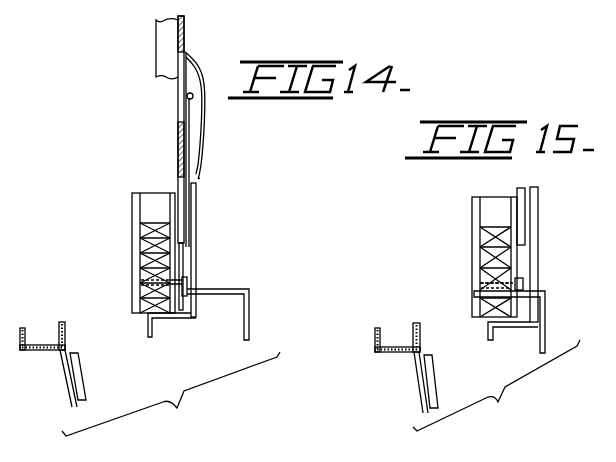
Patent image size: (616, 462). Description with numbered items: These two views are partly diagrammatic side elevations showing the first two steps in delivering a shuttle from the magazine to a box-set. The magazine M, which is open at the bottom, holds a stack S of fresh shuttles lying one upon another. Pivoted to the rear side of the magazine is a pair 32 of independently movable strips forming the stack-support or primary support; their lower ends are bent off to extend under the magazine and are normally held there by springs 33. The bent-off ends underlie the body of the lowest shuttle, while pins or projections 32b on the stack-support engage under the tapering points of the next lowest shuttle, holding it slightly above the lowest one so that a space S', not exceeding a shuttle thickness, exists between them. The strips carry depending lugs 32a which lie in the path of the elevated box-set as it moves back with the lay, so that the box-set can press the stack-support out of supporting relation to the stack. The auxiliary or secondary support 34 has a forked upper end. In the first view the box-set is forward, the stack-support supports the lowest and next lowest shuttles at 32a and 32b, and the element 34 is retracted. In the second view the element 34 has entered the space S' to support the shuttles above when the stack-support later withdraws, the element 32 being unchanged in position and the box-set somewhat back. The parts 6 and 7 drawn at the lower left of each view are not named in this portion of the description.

In FIG. 14, the pair of strips (stack-support) 32 is at (197, 222).
In FIG. 15, the pair of strips (stack-support) 32 is at (538, 236).
In FIG. 14, the depending lugs 32a is at (152, 333).
In FIG. 14, the pins or projections 32b is at (187, 279).
In FIG. 15, the pins or projections 32b is at (523, 290).
In FIG. 14, the springs 33 is at (205, 128).
In FIG. 14, the auxiliary support 34 is at (249, 312).
In FIG. 15, the auxiliary support 34 is at (582, 340).
In FIG. 14, the magazine M is at (137, 197).
In FIG. 15, the magazine M is at (473, 200).
In FIG. 14, the stack of articles S is at (138, 260).
In FIG. 15, the stack of articles S is at (477, 262).
In FIG. 14, the space between shuttles S' is at (136, 298).
In FIG. 15, the space between shuttles S' is at (474, 302).
In FIG. 14, the guide member 6 is at (66, 335).
In FIG. 15, the guide member 6 is at (420, 342).
In FIG. 14, the blade 7 is at (85, 395).